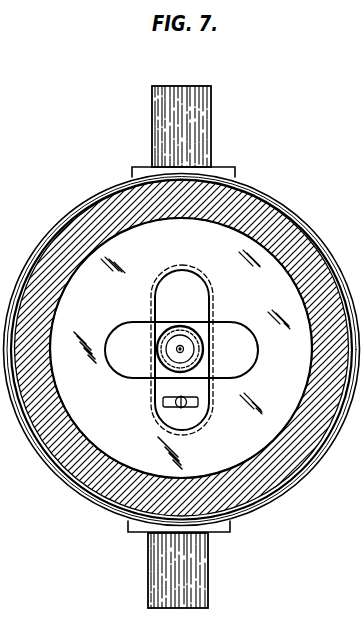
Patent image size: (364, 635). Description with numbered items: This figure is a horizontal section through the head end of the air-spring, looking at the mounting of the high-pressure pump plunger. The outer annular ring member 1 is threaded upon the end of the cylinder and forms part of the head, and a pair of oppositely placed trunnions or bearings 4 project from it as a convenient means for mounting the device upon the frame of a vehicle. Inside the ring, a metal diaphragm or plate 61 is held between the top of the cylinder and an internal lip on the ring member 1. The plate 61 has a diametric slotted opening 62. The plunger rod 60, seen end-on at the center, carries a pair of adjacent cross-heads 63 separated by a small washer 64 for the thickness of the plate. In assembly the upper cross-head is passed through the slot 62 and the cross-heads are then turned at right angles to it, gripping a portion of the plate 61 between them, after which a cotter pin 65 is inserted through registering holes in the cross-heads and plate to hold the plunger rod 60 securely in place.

The annular body or ring member 1 is at (313, 477).
The trunnions or bearings 4 is at (211, 123).
The plunger rod 60 is at (175, 353).
The metal diaphragm or plate 61 is at (181, 348).
The diametric slotted opening 62 is at (181, 350).
The cross-heads 63 is at (212, 293).
The washer 64 is at (175, 322).
The cotter pin 65 is at (192, 405).